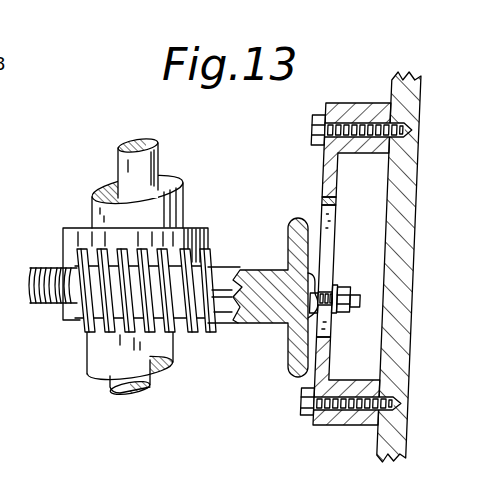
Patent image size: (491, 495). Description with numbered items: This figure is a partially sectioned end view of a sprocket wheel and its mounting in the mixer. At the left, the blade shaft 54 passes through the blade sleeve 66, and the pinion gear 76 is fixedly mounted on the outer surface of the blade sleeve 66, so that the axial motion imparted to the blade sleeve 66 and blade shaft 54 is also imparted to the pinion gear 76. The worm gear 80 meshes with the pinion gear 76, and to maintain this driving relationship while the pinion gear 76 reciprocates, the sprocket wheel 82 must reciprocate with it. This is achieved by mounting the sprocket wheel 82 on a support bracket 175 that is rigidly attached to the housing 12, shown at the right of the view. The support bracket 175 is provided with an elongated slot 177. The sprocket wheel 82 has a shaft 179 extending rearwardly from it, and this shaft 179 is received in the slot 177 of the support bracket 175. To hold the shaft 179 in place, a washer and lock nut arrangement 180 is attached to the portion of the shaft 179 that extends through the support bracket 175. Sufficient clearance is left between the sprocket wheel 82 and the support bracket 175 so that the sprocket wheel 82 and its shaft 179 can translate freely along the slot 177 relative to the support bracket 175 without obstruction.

The housing 12 is at (412, 207).
The blade shaft 54 is at (159, 153).
The blade sleeve 66 is at (183, 196).
The pinion gear 76 is at (43, 268).
The worm gear 80 is at (83, 316).
The sprocket wheel 82 is at (297, 351).
The support bracket 175 is at (334, 168).
The elongated slot 177 is at (325, 211).
The shaft 179 is at (330, 293).
The washer and lock nut arrangement 180 is at (340, 320).